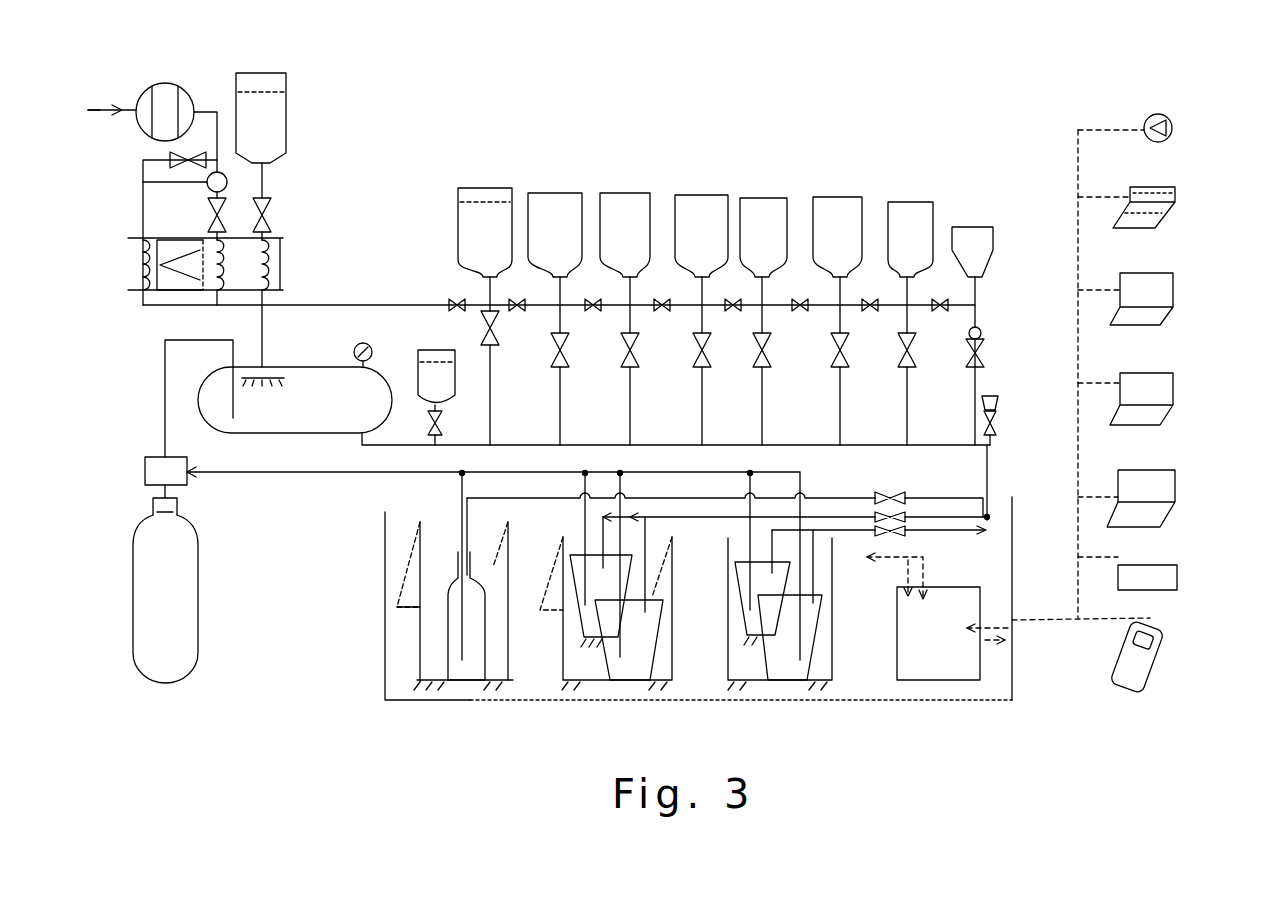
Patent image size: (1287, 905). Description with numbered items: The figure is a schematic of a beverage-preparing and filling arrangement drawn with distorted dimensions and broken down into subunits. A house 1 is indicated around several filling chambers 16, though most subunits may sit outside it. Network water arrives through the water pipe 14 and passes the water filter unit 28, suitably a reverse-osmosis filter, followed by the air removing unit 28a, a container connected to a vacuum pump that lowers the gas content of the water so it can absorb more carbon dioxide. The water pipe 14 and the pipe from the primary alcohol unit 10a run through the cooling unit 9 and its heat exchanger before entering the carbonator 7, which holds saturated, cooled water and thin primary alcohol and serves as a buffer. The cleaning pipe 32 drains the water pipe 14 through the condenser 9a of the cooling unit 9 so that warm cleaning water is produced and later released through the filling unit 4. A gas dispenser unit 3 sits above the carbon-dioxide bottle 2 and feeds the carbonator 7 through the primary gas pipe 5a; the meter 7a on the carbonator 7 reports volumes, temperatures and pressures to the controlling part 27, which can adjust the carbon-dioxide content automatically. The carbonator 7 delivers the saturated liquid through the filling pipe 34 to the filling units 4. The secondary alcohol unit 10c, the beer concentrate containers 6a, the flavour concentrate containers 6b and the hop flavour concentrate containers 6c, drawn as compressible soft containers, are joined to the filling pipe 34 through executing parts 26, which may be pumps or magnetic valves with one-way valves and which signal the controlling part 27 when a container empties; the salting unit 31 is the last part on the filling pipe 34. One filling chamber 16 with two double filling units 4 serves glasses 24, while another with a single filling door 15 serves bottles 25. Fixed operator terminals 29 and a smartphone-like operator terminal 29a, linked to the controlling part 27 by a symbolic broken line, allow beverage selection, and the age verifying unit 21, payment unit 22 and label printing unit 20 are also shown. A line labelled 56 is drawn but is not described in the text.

The house 1 is at (385, 672).
The carbon-dioxide bottle 2 is at (196, 655).
The gas dispenser unit 3 is at (145, 472).
The filling unit 4 is at (741, 544).
The primary gas pipe 5a is at (164, 393).
The beer concentrate container 6a is at (460, 212).
The flavour concentrate container 6b is at (637, 205).
The hop flavour concentrate container 6c is at (975, 240).
The carbonator 7 is at (215, 393).
The meter 7a is at (357, 345).
The cooling unit 9 is at (283, 258).
The condenser 9a is at (130, 268).
The primary alcohol unit 10a is at (286, 110).
The secondary alcohol unit 10c is at (428, 375).
The water pipe 14 is at (92, 122).
The filling door 15 is at (410, 580).
The filling chamber 16 is at (430, 629).
The label printing unit 20 is at (1186, 180).
The age verifying unit 21 is at (1186, 108).
The payment unit 22 is at (1190, 569).
The glass 24 is at (612, 656).
The bottle 25 is at (455, 662).
The executing part 26 is at (447, 297).
The controlling part 27 is at (943, 665).
The water filter unit 28 is at (165, 83).
The air removing unit 28a is at (143, 182).
The operator terminal 29 is at (1186, 283).
The smartphone-like operator terminal 29a is at (1186, 652).
The salting unit 31 is at (997, 400).
The cleaning pipe 32 is at (356, 305).
The filling pipe 34 is at (987, 470).
The gas supply line 56 is at (270, 478).